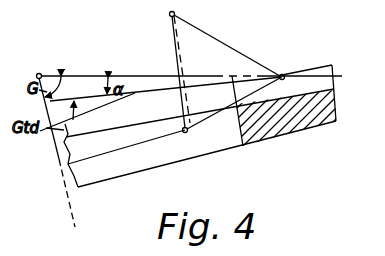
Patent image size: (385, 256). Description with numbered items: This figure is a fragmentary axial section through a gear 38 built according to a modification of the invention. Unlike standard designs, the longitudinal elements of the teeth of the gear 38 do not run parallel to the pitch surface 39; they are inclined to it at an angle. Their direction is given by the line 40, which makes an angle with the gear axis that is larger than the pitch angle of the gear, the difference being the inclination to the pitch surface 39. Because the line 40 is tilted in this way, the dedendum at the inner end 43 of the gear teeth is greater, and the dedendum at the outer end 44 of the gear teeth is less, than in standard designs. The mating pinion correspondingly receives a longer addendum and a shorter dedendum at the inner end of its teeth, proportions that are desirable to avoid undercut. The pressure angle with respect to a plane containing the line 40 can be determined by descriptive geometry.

The gear 38 is at (272, 139).
The pitch surface 39 is at (153, 77).
The line 40 is at (166, 88).
The inner end of the gear teeth 43 is at (227, 95).
The outer end of the gear teeth 44 is at (343, 58).